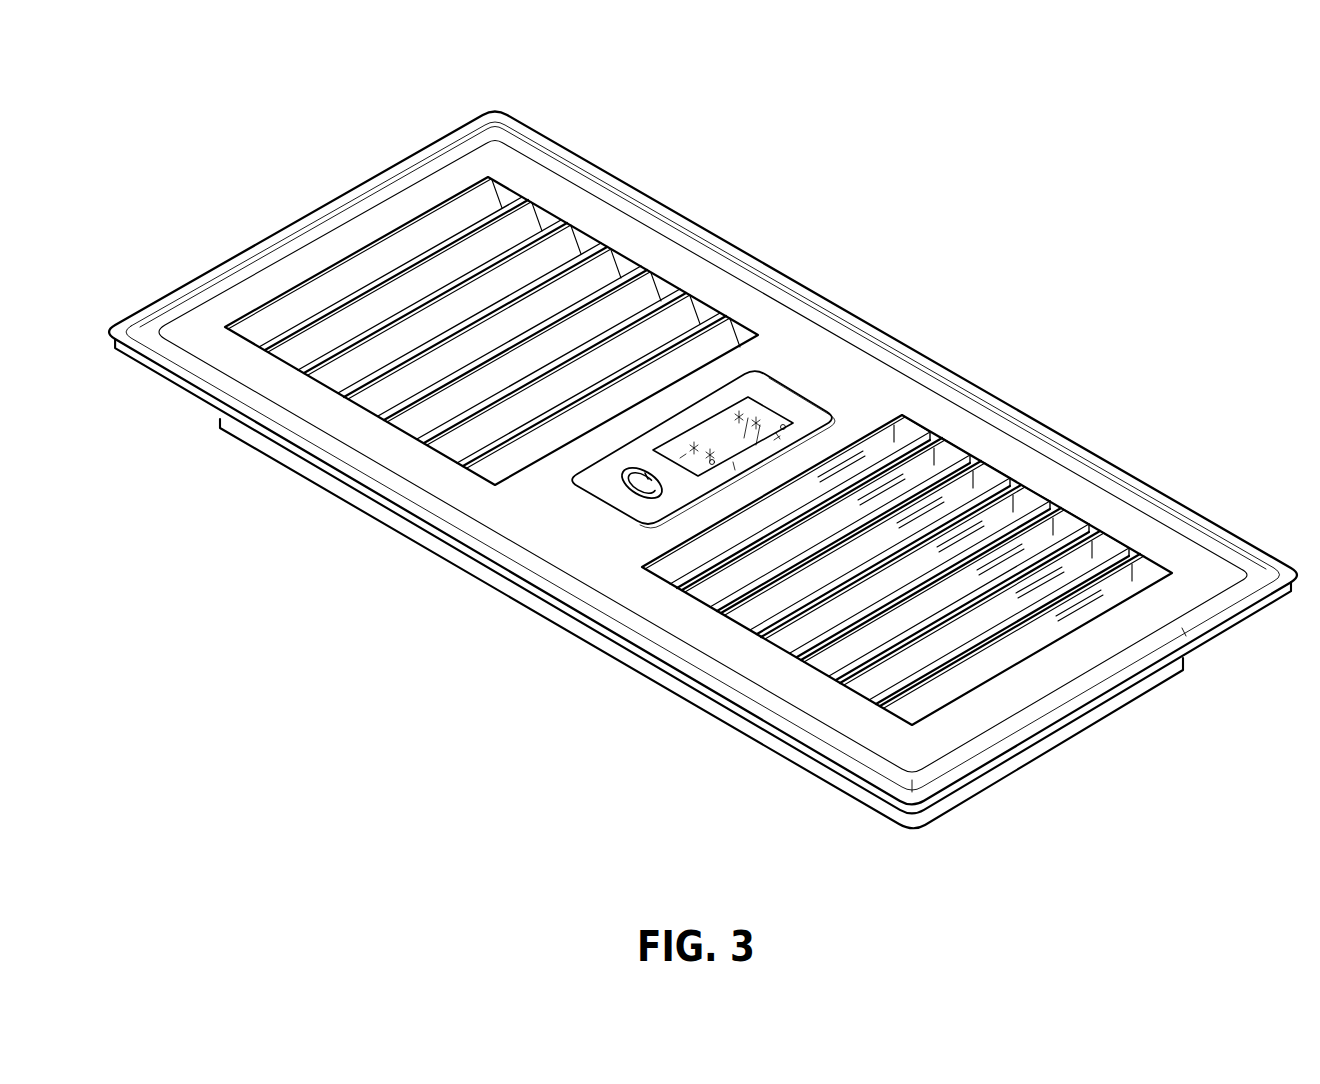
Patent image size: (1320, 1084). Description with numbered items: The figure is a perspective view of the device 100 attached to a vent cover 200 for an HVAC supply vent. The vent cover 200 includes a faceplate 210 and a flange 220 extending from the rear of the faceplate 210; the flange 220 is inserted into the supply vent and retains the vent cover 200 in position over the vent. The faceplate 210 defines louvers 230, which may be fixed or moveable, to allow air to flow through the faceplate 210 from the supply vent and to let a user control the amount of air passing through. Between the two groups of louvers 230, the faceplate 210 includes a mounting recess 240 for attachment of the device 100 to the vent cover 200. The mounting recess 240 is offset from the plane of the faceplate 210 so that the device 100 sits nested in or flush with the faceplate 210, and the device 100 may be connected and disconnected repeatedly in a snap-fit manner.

The device 100 is at (695, 472).
The vent cover 200 is at (703, 433).
The faceplate 210 is at (1177, 538).
The flange 220 is at (252, 450).
The louvers 230 is at (588, 230).
The mounting recess 240 is at (597, 507).